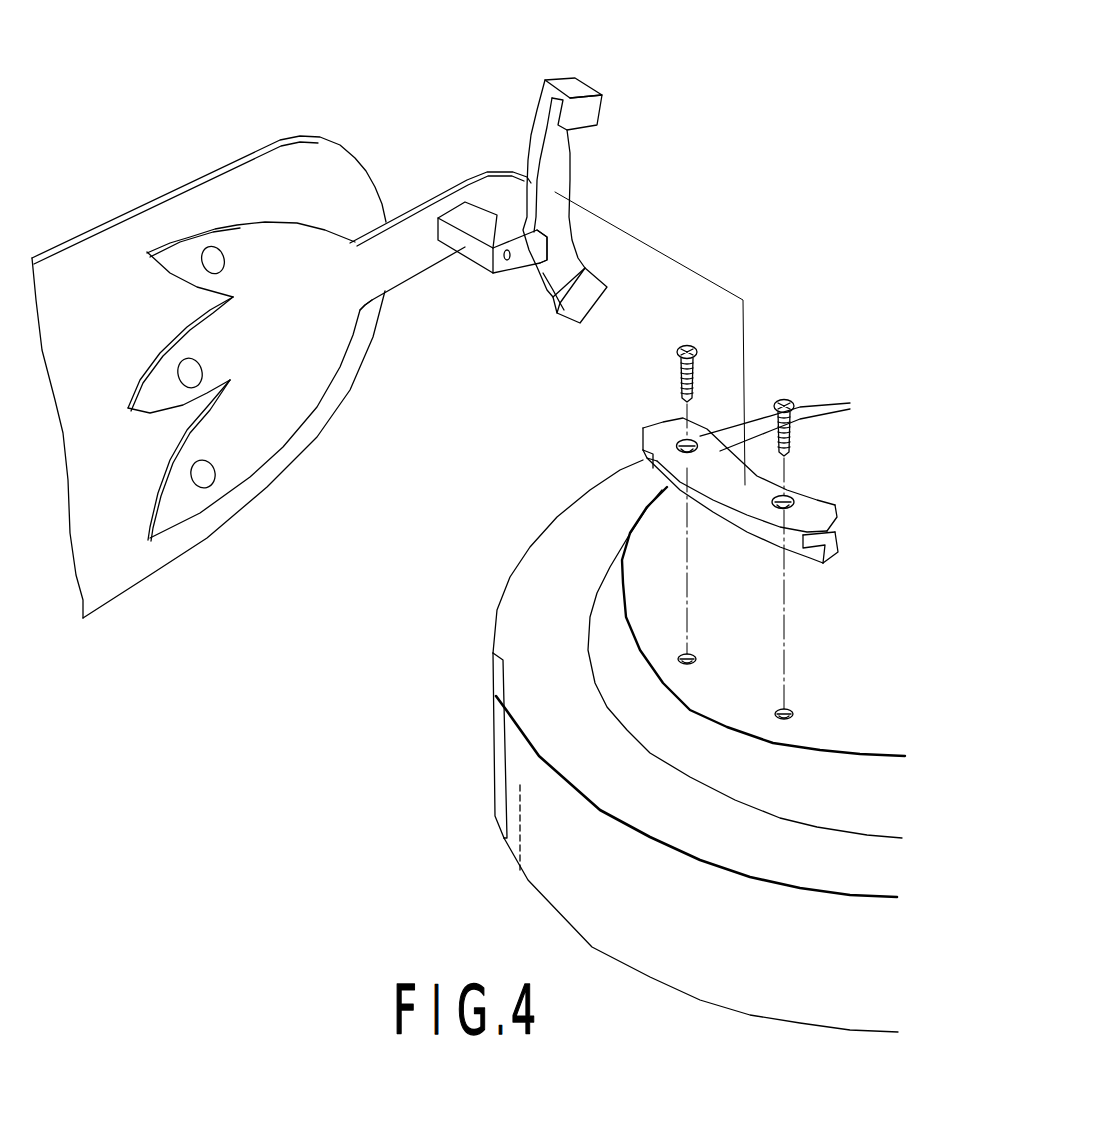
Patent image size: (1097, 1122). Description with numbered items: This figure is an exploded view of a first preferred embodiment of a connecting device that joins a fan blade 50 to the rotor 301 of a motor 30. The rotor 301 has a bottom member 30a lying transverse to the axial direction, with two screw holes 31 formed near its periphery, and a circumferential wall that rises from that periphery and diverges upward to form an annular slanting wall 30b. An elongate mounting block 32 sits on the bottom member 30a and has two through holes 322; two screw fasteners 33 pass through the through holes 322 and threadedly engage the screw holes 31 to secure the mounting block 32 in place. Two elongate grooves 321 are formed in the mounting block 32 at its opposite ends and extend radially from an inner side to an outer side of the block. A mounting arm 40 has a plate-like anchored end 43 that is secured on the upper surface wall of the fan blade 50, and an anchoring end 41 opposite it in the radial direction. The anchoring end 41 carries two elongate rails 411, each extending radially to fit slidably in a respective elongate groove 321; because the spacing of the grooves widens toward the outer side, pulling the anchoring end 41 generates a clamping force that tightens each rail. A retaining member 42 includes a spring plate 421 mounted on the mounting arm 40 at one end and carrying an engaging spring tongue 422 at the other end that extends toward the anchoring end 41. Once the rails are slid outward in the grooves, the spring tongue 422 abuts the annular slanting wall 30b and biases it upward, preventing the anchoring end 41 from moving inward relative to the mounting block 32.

The fan blade 50 is at (217, 163).
The anchored end 43 is at (267, 443).
The mounting arm 40 is at (428, 196).
The anchoring end 41 is at (557, 160).
The elongate rails 411 is at (593, 113).
The retaining member 42 is at (493, 274).
The spring plate 421 is at (517, 256).
The engaging spring tongue 422 is at (548, 243).
The motor 30 is at (483, 763).
The bottom member 30a is at (645, 577).
The annular slanting wall 30b is at (600, 655).
The rotor 301 is at (623, 547).
The screw holes 31 is at (784, 718).
The mounting block 32 is at (727, 521).
The elongate grooves 321 is at (643, 453).
The through holes 322 is at (690, 444).
The screw fasteners 33 is at (784, 399).